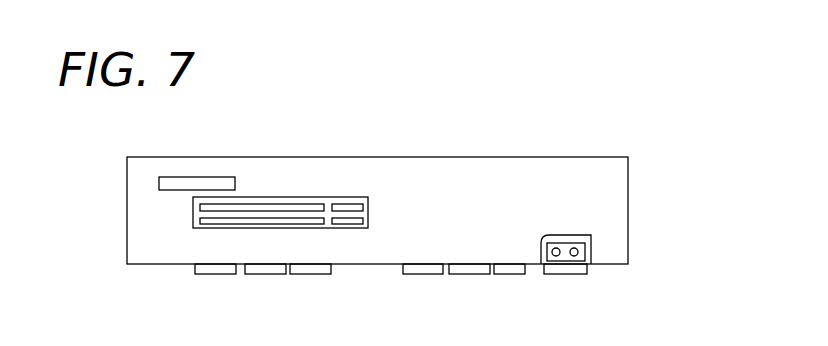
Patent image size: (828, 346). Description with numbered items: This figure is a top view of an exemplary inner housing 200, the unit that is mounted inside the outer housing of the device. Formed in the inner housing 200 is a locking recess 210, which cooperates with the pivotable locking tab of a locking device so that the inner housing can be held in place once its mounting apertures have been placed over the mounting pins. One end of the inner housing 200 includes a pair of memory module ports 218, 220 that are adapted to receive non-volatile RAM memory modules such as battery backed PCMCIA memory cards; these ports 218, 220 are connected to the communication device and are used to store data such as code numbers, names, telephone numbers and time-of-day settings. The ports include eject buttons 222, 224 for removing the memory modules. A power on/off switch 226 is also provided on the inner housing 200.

The inner housing 200 is at (647, 168).
The locking recess 210 is at (198, 177).
The memory module port 218 is at (282, 224).
The memory module port 220 is at (290, 205).
The eject button 222 is at (352, 228).
The eject button 224 is at (350, 205).
The power on/off switch 226 is at (560, 240).